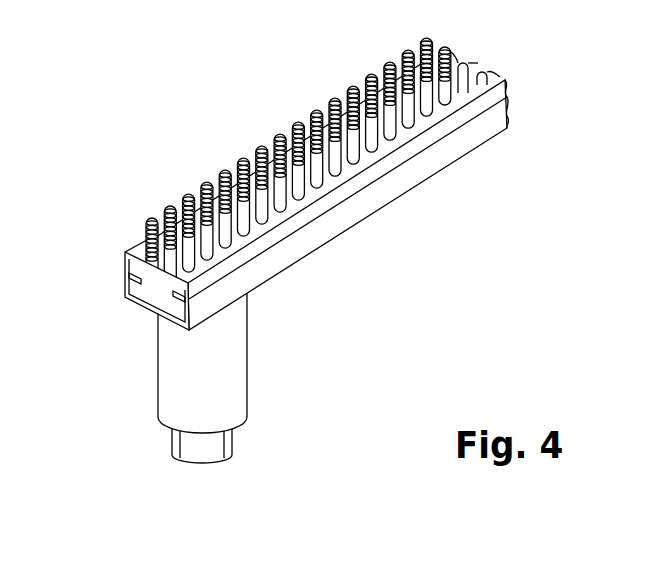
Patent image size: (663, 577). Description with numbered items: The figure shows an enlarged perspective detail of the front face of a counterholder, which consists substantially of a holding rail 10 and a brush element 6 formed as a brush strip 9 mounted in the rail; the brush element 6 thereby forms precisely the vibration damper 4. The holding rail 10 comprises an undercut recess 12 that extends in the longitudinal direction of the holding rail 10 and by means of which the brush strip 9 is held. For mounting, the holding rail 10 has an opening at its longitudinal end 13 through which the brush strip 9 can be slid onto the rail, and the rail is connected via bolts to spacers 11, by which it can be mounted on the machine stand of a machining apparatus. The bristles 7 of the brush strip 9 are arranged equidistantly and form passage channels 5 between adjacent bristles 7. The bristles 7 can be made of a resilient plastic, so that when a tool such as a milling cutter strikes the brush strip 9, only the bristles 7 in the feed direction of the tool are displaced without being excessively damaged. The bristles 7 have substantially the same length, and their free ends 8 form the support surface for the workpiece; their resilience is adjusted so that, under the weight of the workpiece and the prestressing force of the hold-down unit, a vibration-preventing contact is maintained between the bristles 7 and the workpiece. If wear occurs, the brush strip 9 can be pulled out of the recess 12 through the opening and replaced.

The vibration damper 4 is at (275, 225).
The brush element 6 is at (275, 225).
The passage channels 5 is at (178, 192).
The bristles 7 is at (145, 245).
The free ends 8 is at (210, 180).
The brush strip 9 is at (130, 268).
The holding rail 10 is at (280, 257).
The spacers 11 is at (215, 360).
The undercut recess 12 is at (150, 313).
The longitudinal end 13 is at (120, 290).